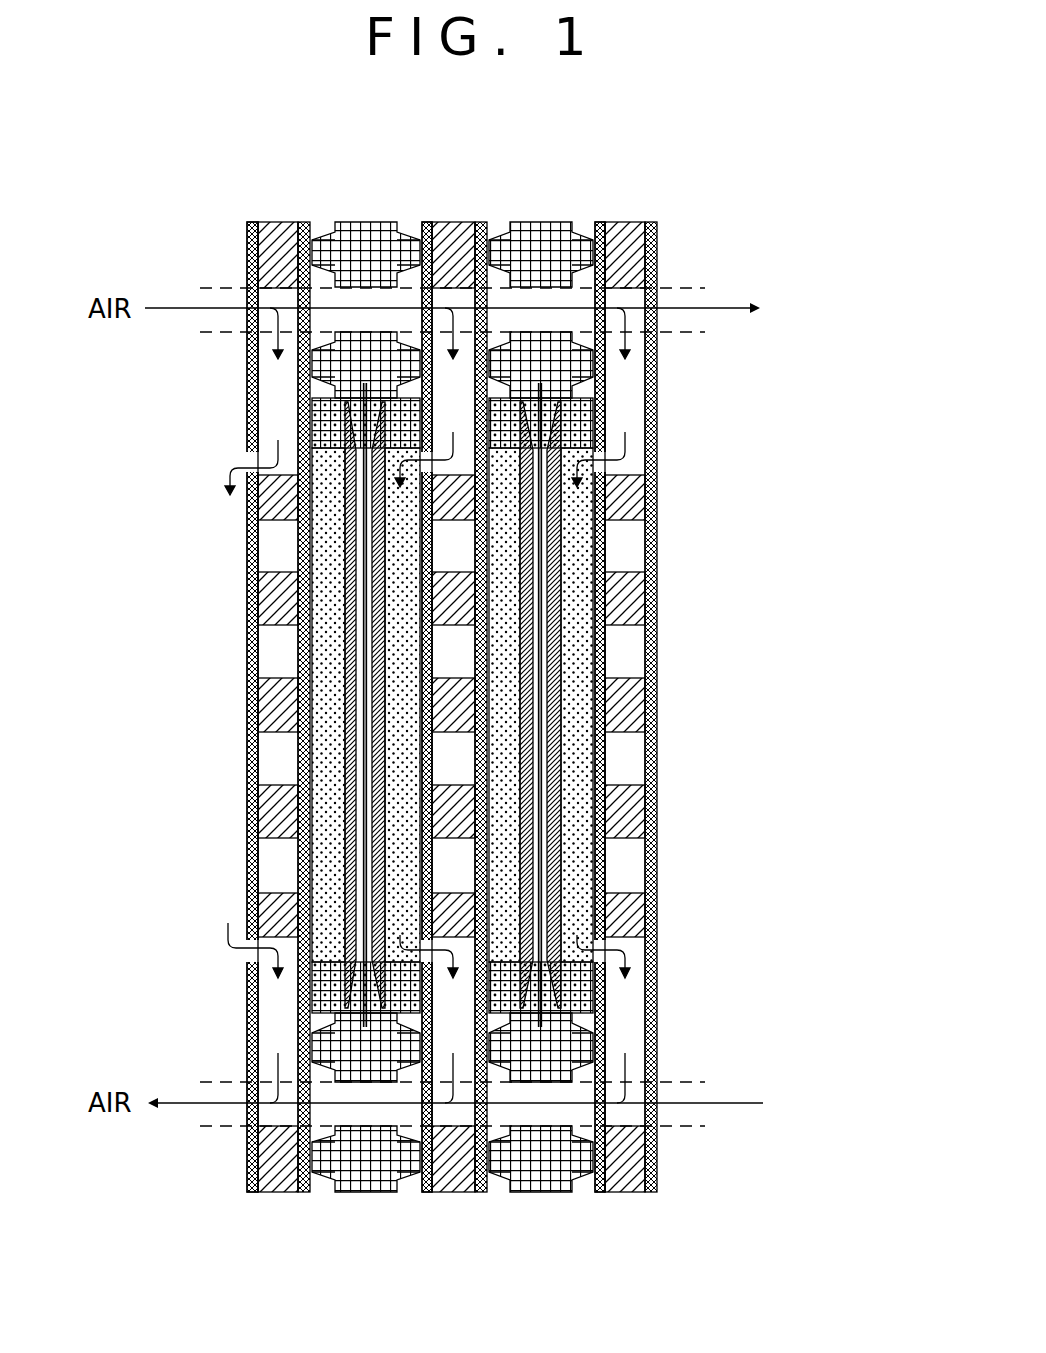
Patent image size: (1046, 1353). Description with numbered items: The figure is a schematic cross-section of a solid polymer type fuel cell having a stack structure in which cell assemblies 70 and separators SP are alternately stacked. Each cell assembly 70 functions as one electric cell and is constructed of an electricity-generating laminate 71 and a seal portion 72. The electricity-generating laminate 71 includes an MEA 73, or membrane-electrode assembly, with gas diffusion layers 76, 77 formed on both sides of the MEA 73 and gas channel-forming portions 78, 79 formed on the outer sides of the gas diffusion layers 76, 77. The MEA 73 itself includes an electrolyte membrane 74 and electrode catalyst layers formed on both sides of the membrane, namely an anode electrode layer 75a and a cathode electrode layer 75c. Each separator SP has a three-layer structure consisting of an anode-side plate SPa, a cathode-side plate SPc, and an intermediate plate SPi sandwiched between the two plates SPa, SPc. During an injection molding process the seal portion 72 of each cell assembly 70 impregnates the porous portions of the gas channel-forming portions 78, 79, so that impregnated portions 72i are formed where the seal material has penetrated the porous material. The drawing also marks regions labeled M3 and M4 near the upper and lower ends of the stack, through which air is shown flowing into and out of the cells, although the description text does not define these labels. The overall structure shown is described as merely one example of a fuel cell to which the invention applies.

The cell assembly 70 is at (592, 677).
The electricity-generating laminate 71 is at (592, 705).
The seal portion 72 is at (552, 248).
The impregnated portion 72i is at (603, 420).
The MEA 73 is at (590, 705).
The electrolyte membrane 74 is at (541, 610).
The anode electrode layer 75a is at (545, 583).
The cathode electrode layer 75c is at (536, 650).
The gas diffusion layer 76 is at (528, 725).
The gas diffusion layer 77 is at (560, 758).
The gas channel-forming portion 78 is at (503, 800).
The gas channel-forming portion 79 is at (577, 847).
The separator SP is at (492, 759).
The cathode-side plate SPc is at (595, 1193).
The intermediate plate SPi is at (622, 1193).
The anode-side plate SPa is at (650, 1193).
The air supply manifold M3 is at (547, 297).
The air discharge manifold M4 is at (553, 1093).